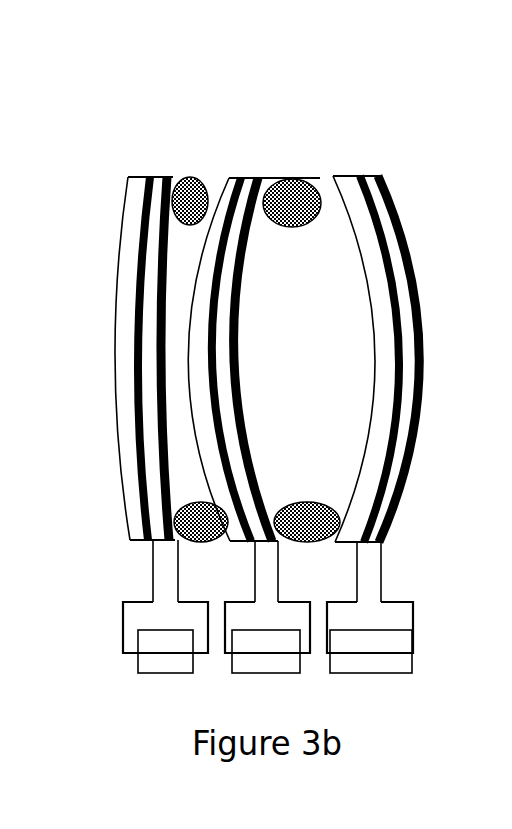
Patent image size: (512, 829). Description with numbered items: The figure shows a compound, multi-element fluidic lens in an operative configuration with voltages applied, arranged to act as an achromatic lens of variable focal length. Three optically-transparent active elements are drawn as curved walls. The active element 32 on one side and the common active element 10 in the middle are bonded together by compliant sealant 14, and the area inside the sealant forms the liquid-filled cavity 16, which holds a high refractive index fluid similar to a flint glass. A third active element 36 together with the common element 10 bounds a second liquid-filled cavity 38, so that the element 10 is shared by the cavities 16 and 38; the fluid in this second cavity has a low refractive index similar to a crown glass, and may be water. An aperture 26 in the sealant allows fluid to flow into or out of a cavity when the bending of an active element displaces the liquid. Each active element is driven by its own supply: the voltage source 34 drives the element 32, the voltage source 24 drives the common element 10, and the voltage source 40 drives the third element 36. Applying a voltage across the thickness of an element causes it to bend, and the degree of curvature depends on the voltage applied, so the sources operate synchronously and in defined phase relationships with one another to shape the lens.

The active element 10 is at (251, 168).
The compliant sealant 14 is at (190, 178).
The cavity 16 is at (175, 305).
The voltage source 24 is at (283, 673).
The aperture 26 is at (220, 178).
The active element 32 is at (148, 157).
The voltage source 34 is at (153, 673).
The third active element 36 is at (356, 162).
The second liquid-filled cavity 38 is at (330, 352).
The voltage source 40 is at (398, 672).